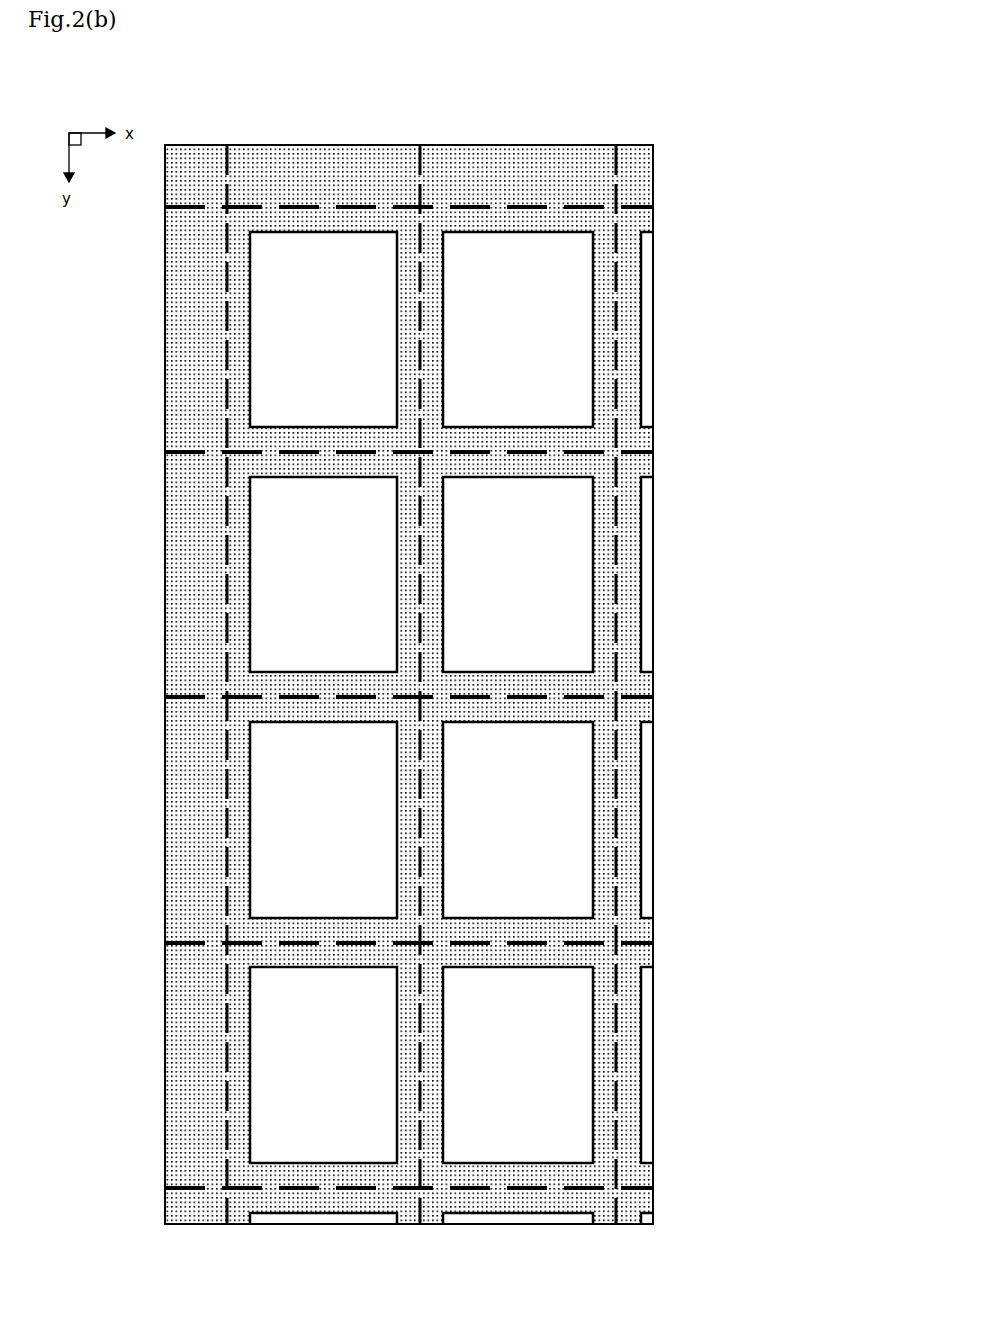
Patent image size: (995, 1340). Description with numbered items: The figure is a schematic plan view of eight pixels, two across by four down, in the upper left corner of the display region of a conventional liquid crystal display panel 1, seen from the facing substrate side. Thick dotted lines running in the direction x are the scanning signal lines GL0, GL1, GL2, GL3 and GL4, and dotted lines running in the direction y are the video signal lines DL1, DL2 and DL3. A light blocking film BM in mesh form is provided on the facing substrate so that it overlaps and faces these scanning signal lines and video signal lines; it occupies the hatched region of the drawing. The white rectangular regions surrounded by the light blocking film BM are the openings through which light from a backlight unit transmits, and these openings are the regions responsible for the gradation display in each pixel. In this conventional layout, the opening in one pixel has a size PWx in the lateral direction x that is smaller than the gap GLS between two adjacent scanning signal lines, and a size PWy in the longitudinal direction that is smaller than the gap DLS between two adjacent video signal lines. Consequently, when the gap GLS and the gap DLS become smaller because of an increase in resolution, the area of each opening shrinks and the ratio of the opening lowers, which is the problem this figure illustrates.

The liquid crystal display panel 1 is at (445, 683).
The light blocking film BM is at (633, 828).
The scanning signal line GL0 is at (190, 212).
The scanning signal line GL1 is at (192, 445).
The scanning signal line GL2 is at (192, 690).
The scanning signal line GL3 is at (192, 935).
The scanning signal line GL4 is at (192, 1180).
The video signal line DL1 is at (231, 161).
The video signal line DL2 is at (426, 160).
The video signal line DL3 is at (623, 160).
The opening size in the lateral direction PWx is at (394, 279).
The opening size in the longitudinal direction PWy is at (482, 235).
The gap between two adjacent video signal lines DLS is at (418, 526).
The gap between two adjacent scanning signal lines GLS is at (653, 207).